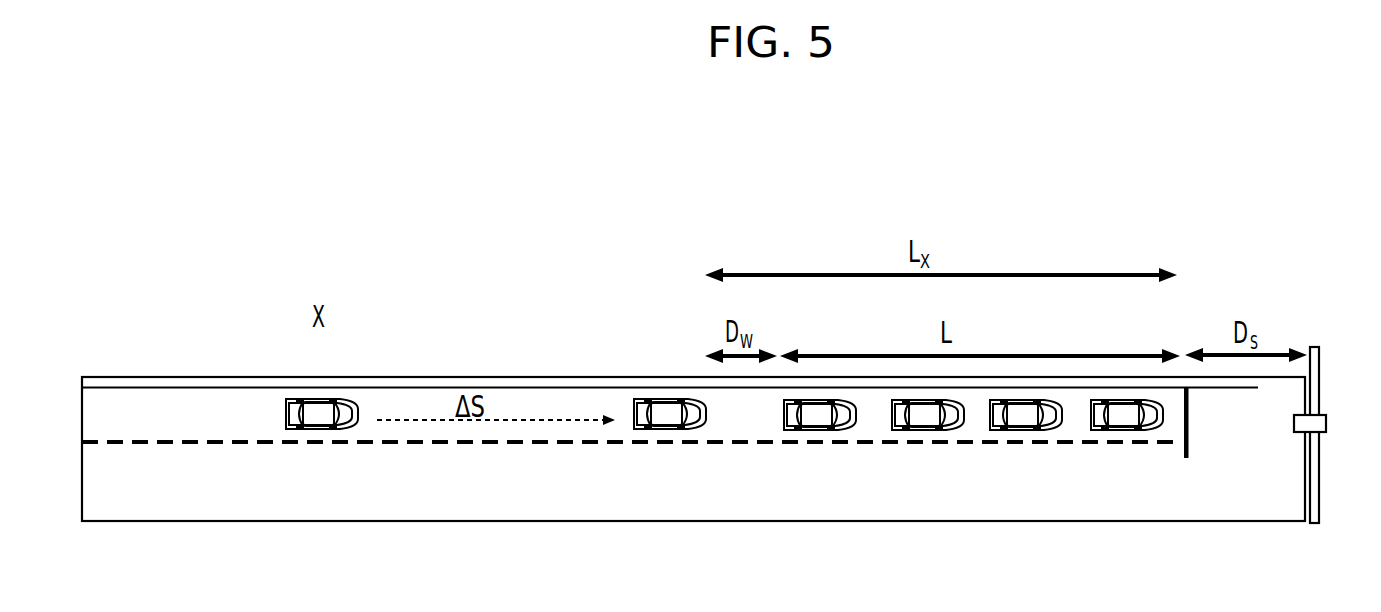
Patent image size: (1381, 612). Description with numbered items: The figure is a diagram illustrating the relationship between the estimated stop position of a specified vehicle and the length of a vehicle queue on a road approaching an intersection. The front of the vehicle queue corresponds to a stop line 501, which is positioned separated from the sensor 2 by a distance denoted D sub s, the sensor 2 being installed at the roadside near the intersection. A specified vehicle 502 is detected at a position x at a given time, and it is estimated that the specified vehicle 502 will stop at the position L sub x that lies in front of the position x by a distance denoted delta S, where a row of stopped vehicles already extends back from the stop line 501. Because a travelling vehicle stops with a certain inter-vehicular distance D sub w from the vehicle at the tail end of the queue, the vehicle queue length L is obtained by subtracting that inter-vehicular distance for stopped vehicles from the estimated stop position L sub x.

The sensor 2 is at (1326, 422).
The stop line 501 is at (1190, 453).
The specified vehicle 502 is at (320, 412).